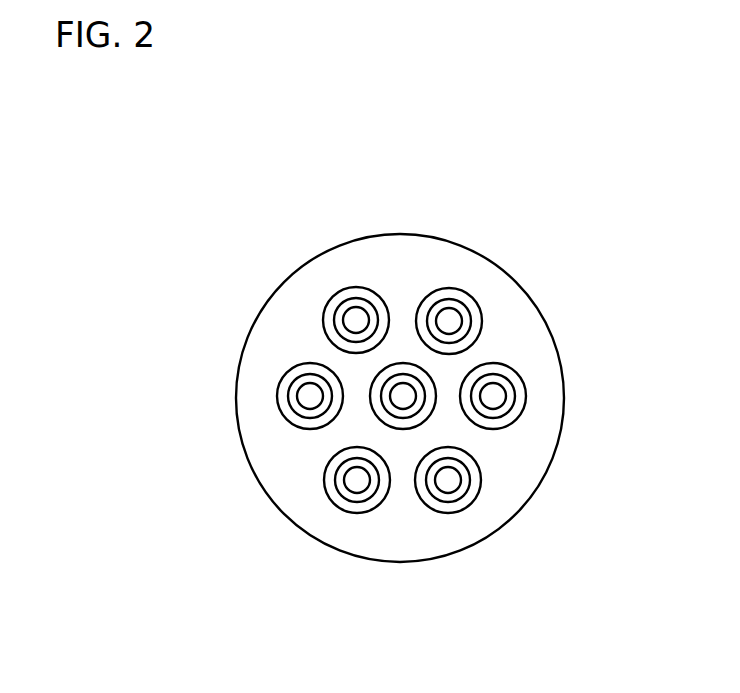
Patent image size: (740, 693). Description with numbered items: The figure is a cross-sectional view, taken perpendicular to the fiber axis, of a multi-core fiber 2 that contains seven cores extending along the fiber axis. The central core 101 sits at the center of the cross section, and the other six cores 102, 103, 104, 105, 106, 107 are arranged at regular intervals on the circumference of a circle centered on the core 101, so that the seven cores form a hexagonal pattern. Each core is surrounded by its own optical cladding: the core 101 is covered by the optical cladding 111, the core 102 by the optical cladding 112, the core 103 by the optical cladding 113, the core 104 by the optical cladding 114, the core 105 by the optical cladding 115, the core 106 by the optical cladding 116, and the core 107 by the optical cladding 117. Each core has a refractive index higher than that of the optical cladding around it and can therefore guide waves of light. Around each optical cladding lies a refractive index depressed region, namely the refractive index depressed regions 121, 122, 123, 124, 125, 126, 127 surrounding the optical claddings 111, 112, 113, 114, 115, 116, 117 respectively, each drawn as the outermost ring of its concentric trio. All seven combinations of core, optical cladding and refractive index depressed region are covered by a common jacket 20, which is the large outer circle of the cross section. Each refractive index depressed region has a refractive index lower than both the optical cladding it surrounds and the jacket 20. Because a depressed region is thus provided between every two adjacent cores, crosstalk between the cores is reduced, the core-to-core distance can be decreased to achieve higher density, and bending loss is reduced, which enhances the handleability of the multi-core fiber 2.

The multi-core fiber 2 is at (504, 205).
The jacket 20 is at (362, 268).
The core 101 is at (398, 385).
The optical cladding 111 is at (403, 380).
The refractive index depressed region 121 is at (413, 375).
The core 102 is at (451, 321).
The optical cladding 112 is at (463, 323).
The refractive index depressed region 122 is at (472, 332).
The core 103 is at (500, 395).
The optical cladding 113 is at (511, 402).
The refractive index depressed region 123 is at (514, 415).
The core 104 is at (452, 480).
The optical cladding 114 is at (458, 492).
The refractive index depressed region 124 is at (460, 502).
The core 105 is at (353, 480).
The optical cladding 115 is at (340, 488).
The refractive index depressed region 125 is at (343, 500).
The core 106 is at (305, 394).
The optical cladding 116 is at (293, 400).
The refractive index depressed region 126 is at (290, 413).
The core 107 is at (350, 318).
The optical cladding 117 is at (337, 317).
The refractive index depressed region 127 is at (327, 328).